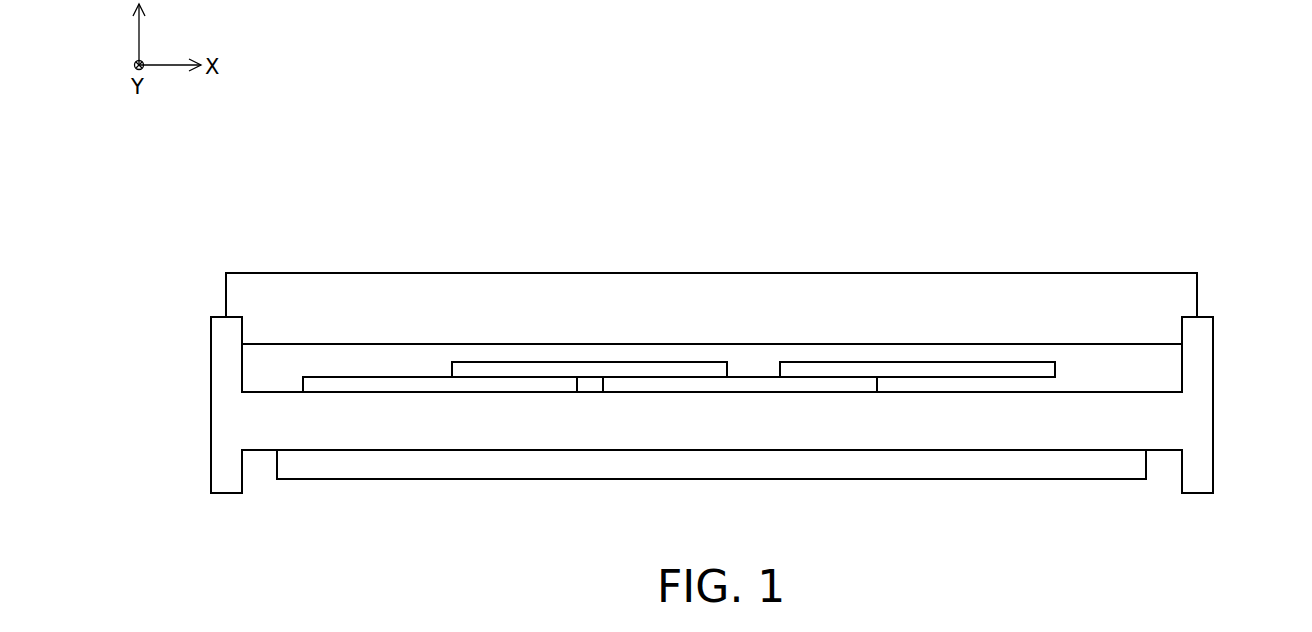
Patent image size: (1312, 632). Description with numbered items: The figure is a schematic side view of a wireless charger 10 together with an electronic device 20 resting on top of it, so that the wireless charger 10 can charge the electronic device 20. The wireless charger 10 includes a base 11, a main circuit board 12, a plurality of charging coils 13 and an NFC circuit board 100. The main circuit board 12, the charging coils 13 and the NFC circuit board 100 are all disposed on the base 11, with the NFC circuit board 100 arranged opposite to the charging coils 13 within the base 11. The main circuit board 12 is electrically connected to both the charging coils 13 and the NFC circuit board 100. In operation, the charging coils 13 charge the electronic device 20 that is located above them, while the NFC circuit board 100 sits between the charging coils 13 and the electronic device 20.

The wireless charger 10 is at (166, 271).
The base 11 is at (229, 425).
The main circuit board 12 is at (428, 465).
The charging coils 13 is at (533, 386).
The electronic device 20 is at (583, 295).
The NFC circuit board 100 is at (1165, 331).